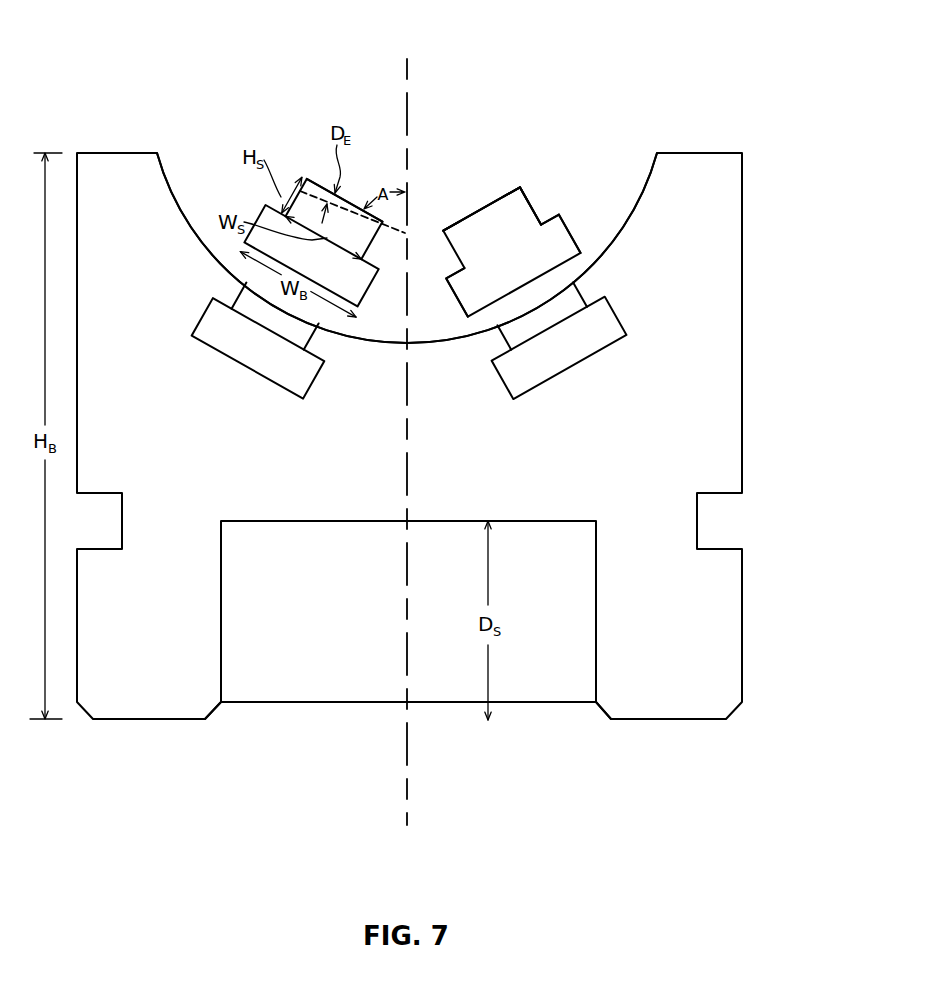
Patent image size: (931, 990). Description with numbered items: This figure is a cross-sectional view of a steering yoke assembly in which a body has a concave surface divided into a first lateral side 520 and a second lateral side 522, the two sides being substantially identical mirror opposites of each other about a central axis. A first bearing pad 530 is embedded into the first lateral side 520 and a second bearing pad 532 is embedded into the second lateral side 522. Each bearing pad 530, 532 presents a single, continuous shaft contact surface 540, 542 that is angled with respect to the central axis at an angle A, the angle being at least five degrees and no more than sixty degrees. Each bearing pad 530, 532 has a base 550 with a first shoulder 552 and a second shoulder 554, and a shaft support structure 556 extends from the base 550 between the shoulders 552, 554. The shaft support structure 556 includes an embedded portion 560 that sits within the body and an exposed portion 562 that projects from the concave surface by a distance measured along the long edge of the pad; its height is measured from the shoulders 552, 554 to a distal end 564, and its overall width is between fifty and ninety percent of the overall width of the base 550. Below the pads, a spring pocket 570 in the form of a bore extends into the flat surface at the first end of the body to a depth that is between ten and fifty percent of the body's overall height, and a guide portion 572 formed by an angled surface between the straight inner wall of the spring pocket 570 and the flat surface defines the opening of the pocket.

The first lateral side 520 is at (647, 183).
The second lateral side 522 is at (172, 191).
The first bearing pad 530 is at (322, 235).
The second bearing pad 532 is at (316, 184).
The shaft contact surface 540 is at (489, 224).
The shaft contact surface 542 is at (363, 204).
The base 550 is at (542, 258).
The first shoulder 552 is at (569, 239).
The second shoulder 554 is at (469, 293).
The shaft support structure 556 is at (483, 208).
The embedded portion 560 is at (523, 223).
The exposed portion 562 is at (519, 194).
The distal end 564 is at (467, 216).
The spring pocket 570 is at (222, 664).
The guide portion 572 is at (590, 710).